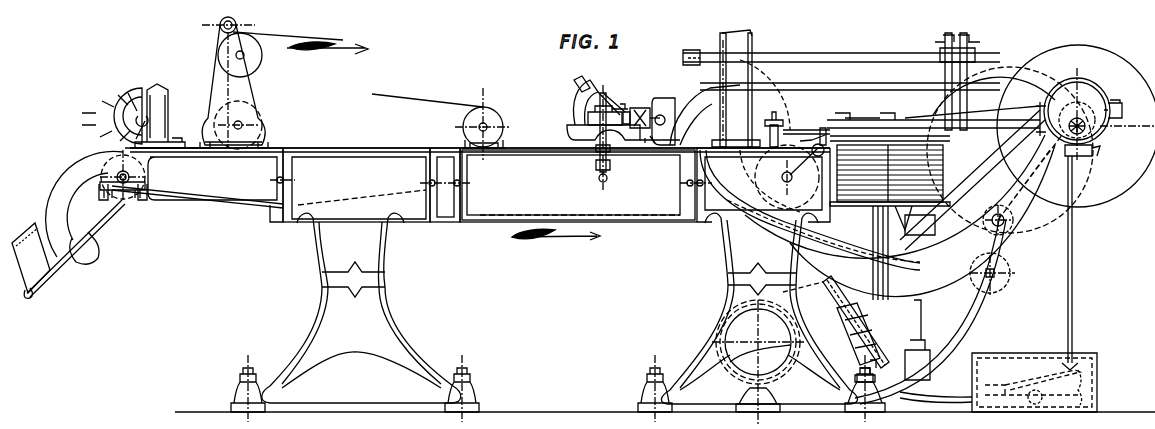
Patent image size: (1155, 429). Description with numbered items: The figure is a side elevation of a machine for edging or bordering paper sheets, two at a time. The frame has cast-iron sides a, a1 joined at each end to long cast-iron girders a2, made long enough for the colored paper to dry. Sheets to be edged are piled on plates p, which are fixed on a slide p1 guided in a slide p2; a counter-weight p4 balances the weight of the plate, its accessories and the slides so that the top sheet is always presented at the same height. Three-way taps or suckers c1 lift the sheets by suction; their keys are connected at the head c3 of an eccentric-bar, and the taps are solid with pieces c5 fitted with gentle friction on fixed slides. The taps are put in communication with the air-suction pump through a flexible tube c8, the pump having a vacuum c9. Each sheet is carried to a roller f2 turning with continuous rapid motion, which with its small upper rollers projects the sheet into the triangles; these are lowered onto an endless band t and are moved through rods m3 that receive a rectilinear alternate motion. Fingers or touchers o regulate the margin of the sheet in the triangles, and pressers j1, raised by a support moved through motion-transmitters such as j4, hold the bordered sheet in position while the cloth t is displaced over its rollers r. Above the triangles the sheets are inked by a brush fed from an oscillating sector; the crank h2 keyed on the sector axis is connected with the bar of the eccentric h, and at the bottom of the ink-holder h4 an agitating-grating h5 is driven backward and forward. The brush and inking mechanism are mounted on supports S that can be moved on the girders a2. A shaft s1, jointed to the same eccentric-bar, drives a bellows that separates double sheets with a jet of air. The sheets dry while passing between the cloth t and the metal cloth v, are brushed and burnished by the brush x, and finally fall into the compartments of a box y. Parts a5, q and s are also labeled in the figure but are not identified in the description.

The anterior side a is at (759, 308).
The side a1 is at (361, 308).
The girder a2 is at (578, 185).
The curved arm a5 is at (919, 182).
The three-way tap c1 is at (836, 322).
The head of the eccentric-bar c3 is at (875, 136).
The piece c5 is at (936, 116).
The flexible tube c8 is at (930, 309).
The vacuum c9 is at (758, 342).
The roller f2 is at (807, 159).
The eccentric h is at (1076, 126).
The crank h2 is at (596, 137).
The ink-holder h4 is at (588, 108).
The agitating-grating h5 is at (810, 210).
The presser j1 is at (730, 88).
The motion-transmitter j4 is at (850, 78).
The rod m3 is at (841, 81).
The finger or toucher o is at (792, 129).
The plate p is at (893, 222).
The slide p1 is at (96, 207).
The slide p2 is at (868, 367).
The counter-weight p4 is at (923, 340).
The block q is at (636, 109).
The roller r is at (787, 177).
The support S is at (660, 121).
The box s is at (1034, 382).
The shaft s1 is at (1075, 263).
The endless band t is at (363, 213).
The metal cloth v is at (355, 88).
The brush x is at (141, 109).
The box y is at (68, 249).